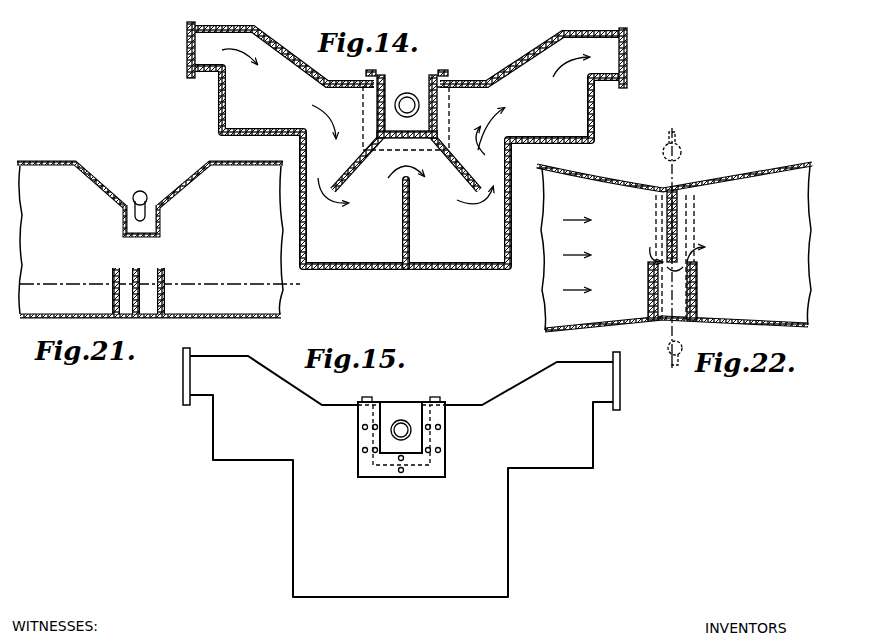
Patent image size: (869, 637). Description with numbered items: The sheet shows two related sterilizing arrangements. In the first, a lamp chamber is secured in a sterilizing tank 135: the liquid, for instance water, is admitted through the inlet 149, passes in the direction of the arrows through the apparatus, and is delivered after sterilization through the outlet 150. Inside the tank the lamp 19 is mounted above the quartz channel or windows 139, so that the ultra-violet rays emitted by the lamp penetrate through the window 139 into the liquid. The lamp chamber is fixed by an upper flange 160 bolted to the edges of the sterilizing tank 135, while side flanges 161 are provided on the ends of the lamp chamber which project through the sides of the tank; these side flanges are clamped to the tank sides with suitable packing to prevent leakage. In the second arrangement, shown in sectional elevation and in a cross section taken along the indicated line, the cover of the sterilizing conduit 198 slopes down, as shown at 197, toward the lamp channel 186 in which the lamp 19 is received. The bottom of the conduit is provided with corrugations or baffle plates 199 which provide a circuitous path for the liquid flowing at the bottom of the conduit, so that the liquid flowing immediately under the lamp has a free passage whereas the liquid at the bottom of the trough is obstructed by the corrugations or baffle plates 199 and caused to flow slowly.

In FIG. 14, the sterilizing tank 135 is at (510, 241).
In FIG. 15, the sterilizing tank 135 is at (510, 546).
In FIG. 14, the inlet 149 is at (188, 58).
In FIG. 15, the inlet 149 is at (169, 376).
In FIG. 14, the outlet 150 is at (627, 58).
In FIG. 15, the outlet 150 is at (620, 384).
In FIG. 14, the upper flange 160 is at (368, 73).
In FIG. 15, the upper flange 160 is at (441, 400).
In FIG. 14, the quartz channel or windows 139 is at (377, 109).
In FIG. 14, the side flanges 161 is at (427, 135).
In FIG. 15, the side flanges 161 is at (386, 478).
In FIG. 14, the lamp 19 is at (407, 92).
In FIG. 21, the lamp 19 is at (143, 195).
In FIG. 22, the lamp 19 is at (681, 152).
In FIG. 15, the lamp 19 is at (401, 419).
In FIG. 21, the sterilizing conduit 198 is at (62, 162).
In FIG. 22, the sterilizing conduit 198 is at (763, 172).
In FIG. 21, the sloping portion of cover 197 is at (197, 174).
In FIG. 21, the lamp channel 186 is at (162, 216).
In FIG. 22, the lamp channel 186 is at (696, 214).
In FIG. 21, the corrugations or baffle plates 199 is at (158, 267).
In FIG. 22, the corrugations or baffle plates 199 is at (655, 262).